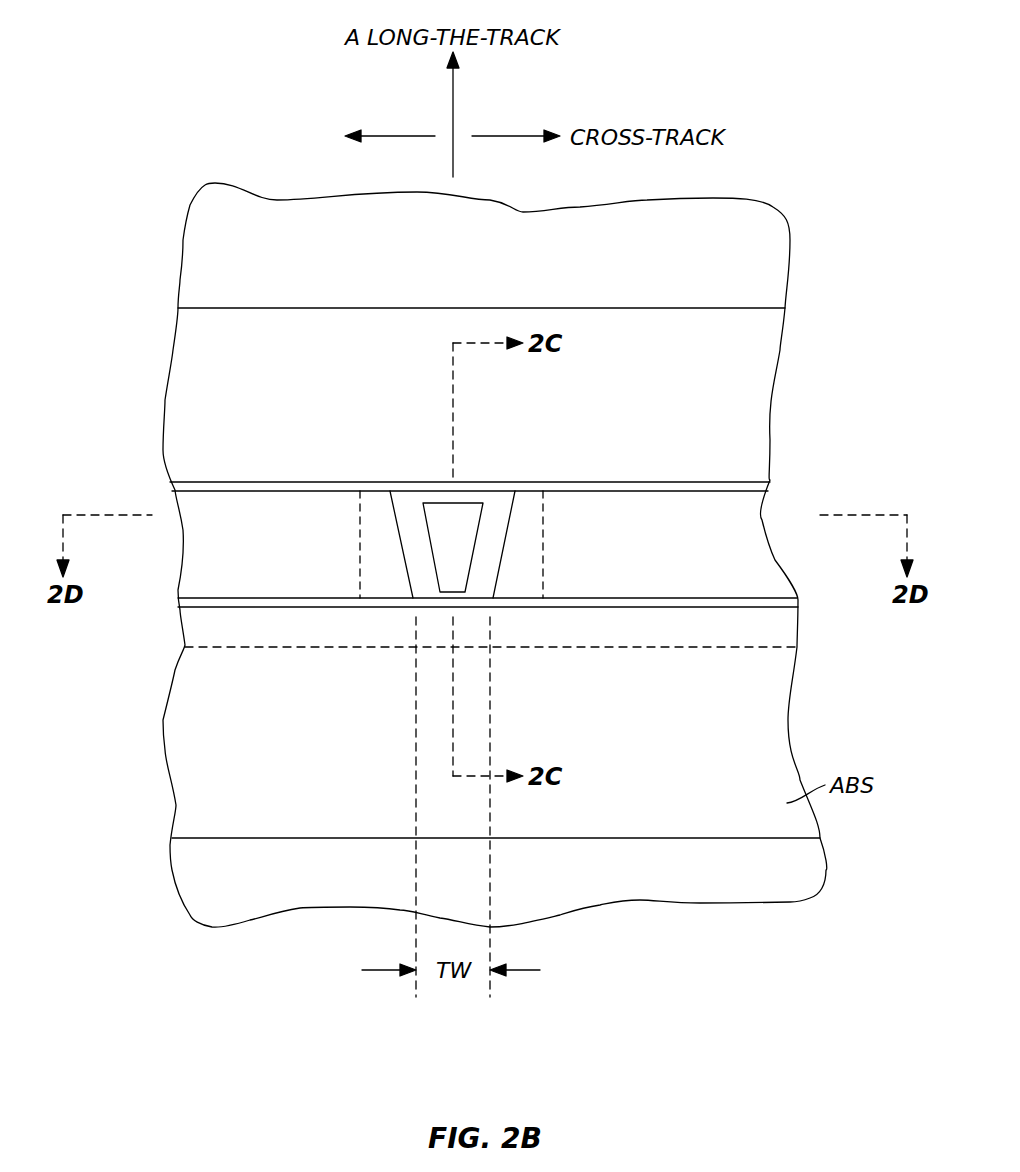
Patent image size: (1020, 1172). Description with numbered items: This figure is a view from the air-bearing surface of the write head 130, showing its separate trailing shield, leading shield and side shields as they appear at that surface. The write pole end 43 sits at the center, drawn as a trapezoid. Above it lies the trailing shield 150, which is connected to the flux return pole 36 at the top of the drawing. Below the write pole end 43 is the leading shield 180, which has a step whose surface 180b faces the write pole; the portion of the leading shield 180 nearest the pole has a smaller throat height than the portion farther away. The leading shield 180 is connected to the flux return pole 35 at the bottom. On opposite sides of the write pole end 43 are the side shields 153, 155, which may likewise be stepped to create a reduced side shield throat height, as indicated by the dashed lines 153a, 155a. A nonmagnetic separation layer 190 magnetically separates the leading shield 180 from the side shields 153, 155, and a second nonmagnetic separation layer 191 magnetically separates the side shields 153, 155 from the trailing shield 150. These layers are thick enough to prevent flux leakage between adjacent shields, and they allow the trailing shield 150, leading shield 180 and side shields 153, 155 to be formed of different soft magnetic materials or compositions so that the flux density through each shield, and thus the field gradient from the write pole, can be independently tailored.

The write head 130 is at (805, 175).
The flux return pole 36 is at (192, 250).
The trailing shield 150 is at (775, 381).
The nonmagnetic separation layer 191 is at (768, 486).
The side shield 155 is at (190, 555).
The dashed line indicating side shield step 155a is at (355, 553).
The side shield 153 is at (765, 565).
The dashed line indicating side shield step 153a is at (545, 518).
The write pole end 43 is at (445, 515).
The nonmagnetic separation layer 190 is at (487, 583).
The leading shield step surface 180b is at (660, 648).
The leading shield 180 is at (182, 752).
The flux return pole 35 is at (180, 876).